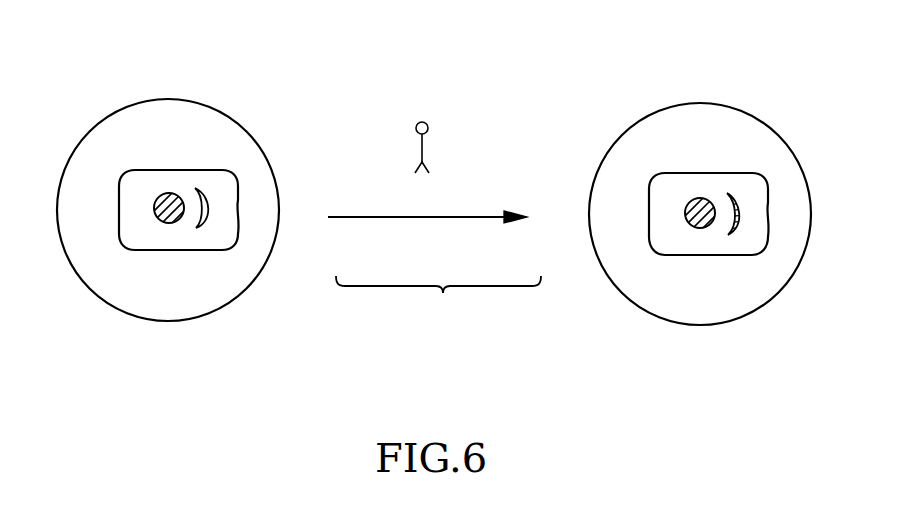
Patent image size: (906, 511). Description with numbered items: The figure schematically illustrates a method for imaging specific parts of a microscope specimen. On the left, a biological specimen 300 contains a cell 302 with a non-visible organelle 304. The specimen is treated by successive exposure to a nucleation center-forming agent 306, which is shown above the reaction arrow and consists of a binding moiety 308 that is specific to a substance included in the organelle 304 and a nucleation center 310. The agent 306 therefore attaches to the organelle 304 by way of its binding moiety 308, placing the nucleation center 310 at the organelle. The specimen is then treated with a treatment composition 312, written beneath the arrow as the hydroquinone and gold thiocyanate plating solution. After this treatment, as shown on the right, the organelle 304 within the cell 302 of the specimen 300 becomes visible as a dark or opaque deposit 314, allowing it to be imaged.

The biological specimen 300 is at (145, 101).
The cell 302 is at (202, 170).
The organelle 304 is at (205, 224).
The nucleation center-forming agent 306 is at (424, 150).
The binding moiety 308 is at (427, 174).
The nucleation center 310 is at (425, 122).
The treatment composition 312 is at (437, 279).
The dark or opaque deposit 314 is at (740, 200).